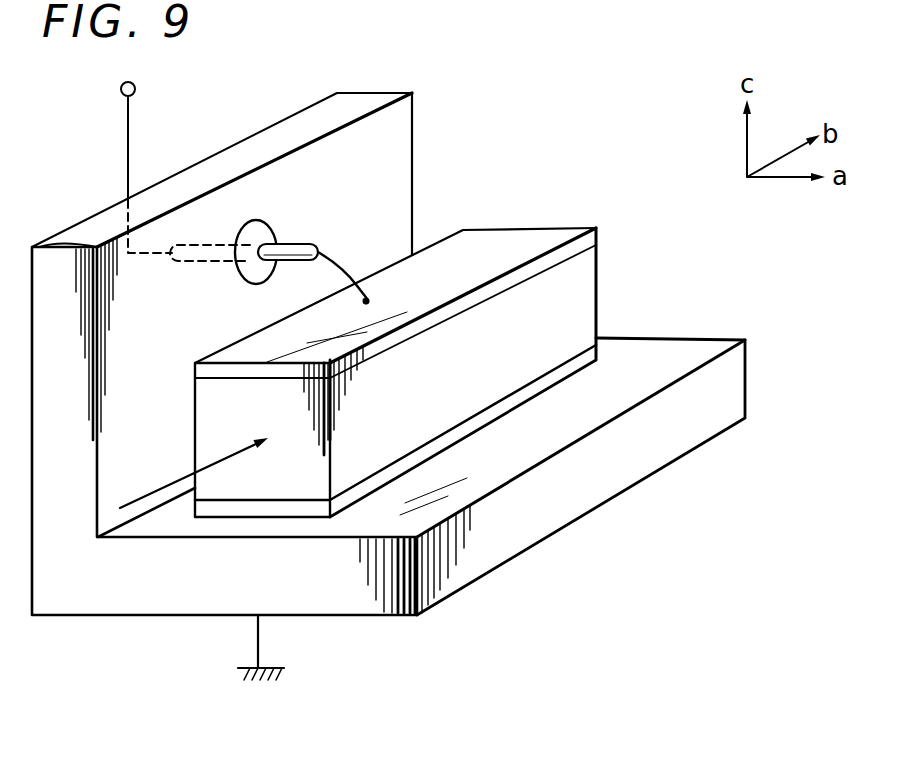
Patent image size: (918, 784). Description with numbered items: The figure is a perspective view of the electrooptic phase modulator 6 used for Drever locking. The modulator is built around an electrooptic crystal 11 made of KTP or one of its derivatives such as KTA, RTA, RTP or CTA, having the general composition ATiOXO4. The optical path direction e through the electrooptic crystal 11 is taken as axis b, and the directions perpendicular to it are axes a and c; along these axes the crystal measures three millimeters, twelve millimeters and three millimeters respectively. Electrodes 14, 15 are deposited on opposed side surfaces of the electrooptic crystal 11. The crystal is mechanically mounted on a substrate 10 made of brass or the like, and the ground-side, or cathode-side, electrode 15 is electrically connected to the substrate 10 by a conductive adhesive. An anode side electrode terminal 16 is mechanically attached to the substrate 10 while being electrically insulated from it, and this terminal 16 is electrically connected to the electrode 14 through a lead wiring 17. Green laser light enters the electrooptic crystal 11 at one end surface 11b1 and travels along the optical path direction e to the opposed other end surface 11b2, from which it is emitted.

The electrooptic phase modulator 6 is at (500, 663).
The substrate 10 is at (692, 425).
The electrooptic crystal 11 is at (575, 312).
The end surface 11b1 is at (295, 476).
The other end surface 11b2 is at (602, 252).
The electrode 14 is at (487, 247).
The electrode 15 is at (505, 405).
The anode side electrode terminal 16 is at (290, 245).
The lead wiring 17 is at (343, 273).
The optical path direction e is at (223, 462).